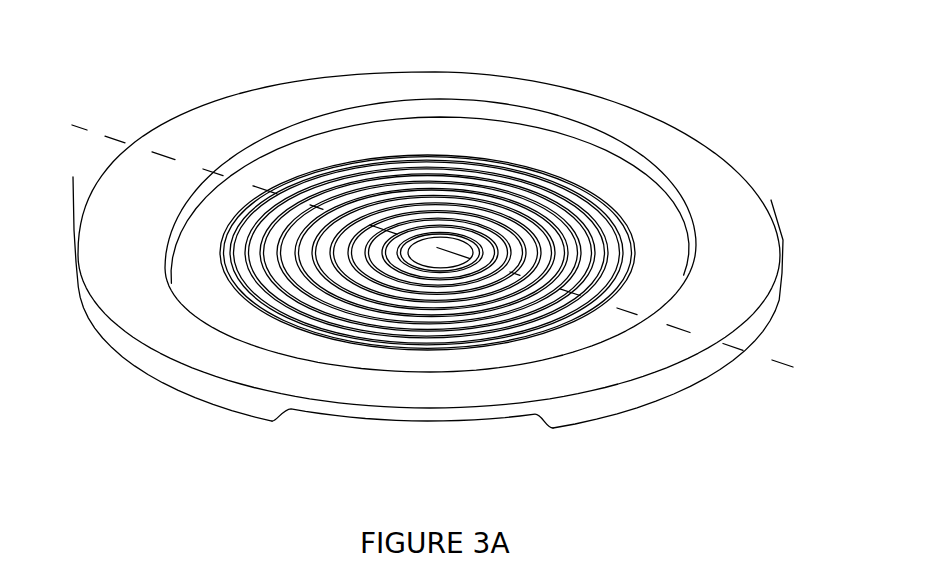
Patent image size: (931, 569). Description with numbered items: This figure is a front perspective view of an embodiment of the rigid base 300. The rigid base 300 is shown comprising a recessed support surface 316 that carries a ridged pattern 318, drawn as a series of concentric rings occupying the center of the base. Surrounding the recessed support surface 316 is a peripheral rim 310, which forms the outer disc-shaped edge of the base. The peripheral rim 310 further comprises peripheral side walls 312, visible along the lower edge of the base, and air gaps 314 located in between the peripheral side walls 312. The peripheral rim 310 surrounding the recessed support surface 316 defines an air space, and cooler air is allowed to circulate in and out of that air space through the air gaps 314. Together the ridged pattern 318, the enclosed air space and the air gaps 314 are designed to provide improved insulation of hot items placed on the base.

The rigid base 300 is at (178, 54).
The peripheral rim 310 is at (753, 250).
The peripheral side walls 312 is at (190, 380).
The air gaps 314 is at (476, 431).
The recessed support surface 316 is at (437, 107).
The ridged pattern 318 is at (563, 200).